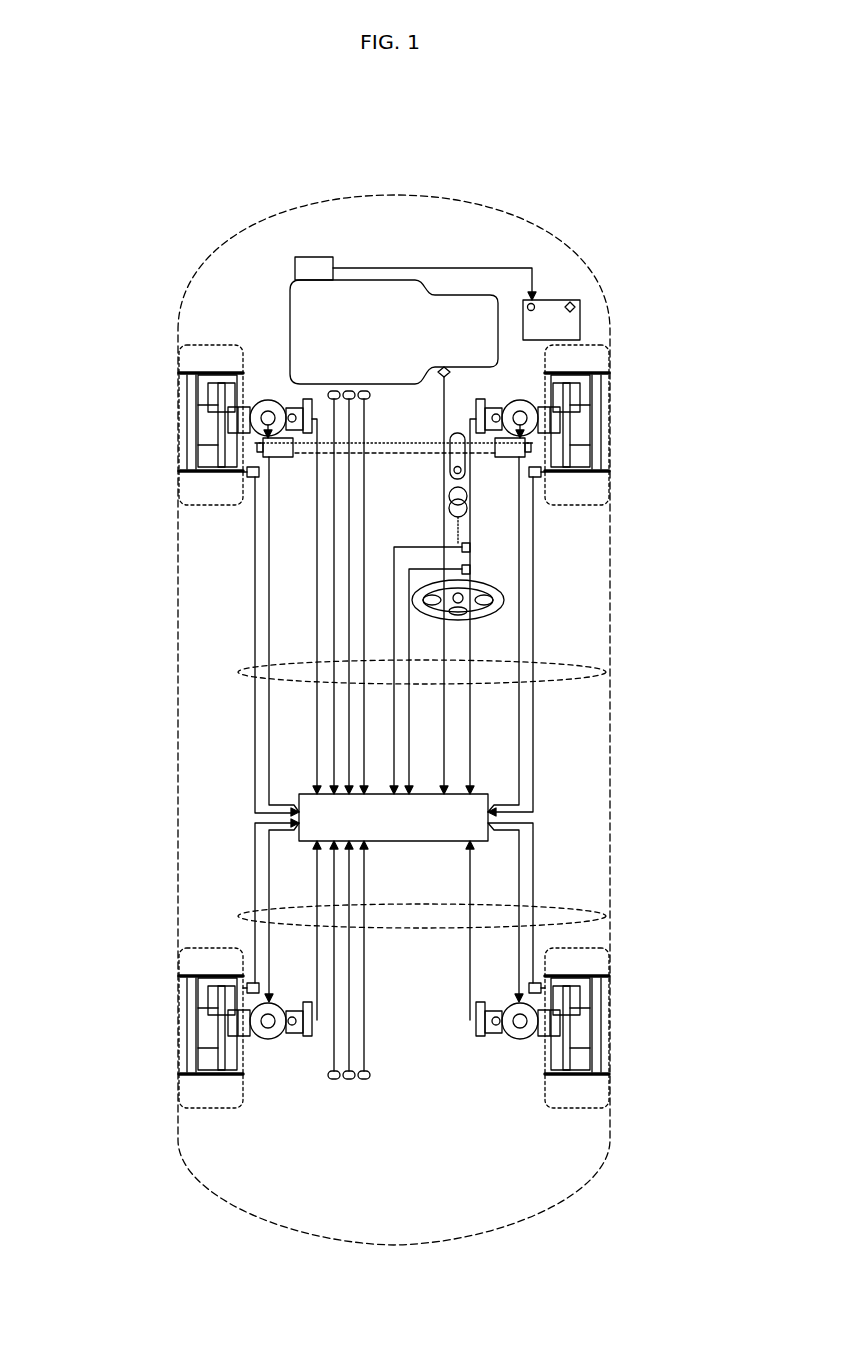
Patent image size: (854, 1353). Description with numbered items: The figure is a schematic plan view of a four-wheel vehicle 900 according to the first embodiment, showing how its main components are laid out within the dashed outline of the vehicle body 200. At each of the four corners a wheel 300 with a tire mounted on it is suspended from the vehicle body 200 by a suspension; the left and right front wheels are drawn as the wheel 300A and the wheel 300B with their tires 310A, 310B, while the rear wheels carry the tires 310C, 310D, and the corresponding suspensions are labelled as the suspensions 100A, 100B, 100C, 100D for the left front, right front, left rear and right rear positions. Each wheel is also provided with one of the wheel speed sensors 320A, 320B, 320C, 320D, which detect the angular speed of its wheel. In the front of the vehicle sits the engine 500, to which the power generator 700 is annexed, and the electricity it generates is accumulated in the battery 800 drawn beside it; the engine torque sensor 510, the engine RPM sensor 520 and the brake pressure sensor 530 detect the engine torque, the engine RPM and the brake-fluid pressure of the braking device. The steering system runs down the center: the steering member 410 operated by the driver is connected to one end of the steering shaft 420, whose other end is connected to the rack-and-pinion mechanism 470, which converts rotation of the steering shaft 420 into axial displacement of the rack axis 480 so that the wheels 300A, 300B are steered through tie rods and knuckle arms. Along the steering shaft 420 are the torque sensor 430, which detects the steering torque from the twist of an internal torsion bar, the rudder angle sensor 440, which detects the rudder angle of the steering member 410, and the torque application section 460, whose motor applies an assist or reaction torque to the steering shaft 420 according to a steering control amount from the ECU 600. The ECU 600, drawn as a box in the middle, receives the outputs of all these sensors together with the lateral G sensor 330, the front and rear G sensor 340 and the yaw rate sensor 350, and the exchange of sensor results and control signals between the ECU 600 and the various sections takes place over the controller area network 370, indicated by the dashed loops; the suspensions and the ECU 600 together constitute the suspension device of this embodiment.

The vehicle 900 is at (586, 150).
The vehicle body 200 is at (597, 276).
The power generator 700 is at (327, 257).
The battery 800 is at (578, 328).
The engine 500 is at (290, 328).
The engine torque sensor 510 is at (336, 390).
The engine RPM sensor 520 is at (351, 390).
The brake pressure sensor 530 is at (366, 390).
The rack axis 480 is at (385, 443).
The rack-and-pinion mechanism 470 is at (449, 458).
The torque application section 460 is at (468, 497).
The rudder angle sensor 440 is at (470, 548).
The torque sensor 430 is at (470, 570).
The steering shaft 420 is at (500, 583).
The steering member 410 is at (497, 605).
The controller area network 370 is at (545, 917).
The ECU 600 is at (389, 842).
The lateral G sensor 330 is at (336, 1082).
The front and rear G sensor 340 is at (350, 1082).
The yaw rate sensor 350 is at (365, 1082).
The wheel 300A is at (182, 388).
The wheel 300B is at (606, 388).
The wheel 300 is at (190, 990).
The tire 310A is at (190, 498).
The tire 310B is at (598, 498).
The tire 310C is at (192, 1100).
The tire 310D is at (598, 1100).
The wheel speed sensor 320A is at (246, 477).
The wheel speed sensor 320B is at (542, 477).
The wheel speed sensor 320C is at (247, 985).
The wheel speed sensor 320D is at (541, 985).
The suspension 100A is at (238, 452).
The suspension 100B is at (550, 452).
The suspension 100C is at (238, 1054).
The suspension 100D is at (550, 1054).